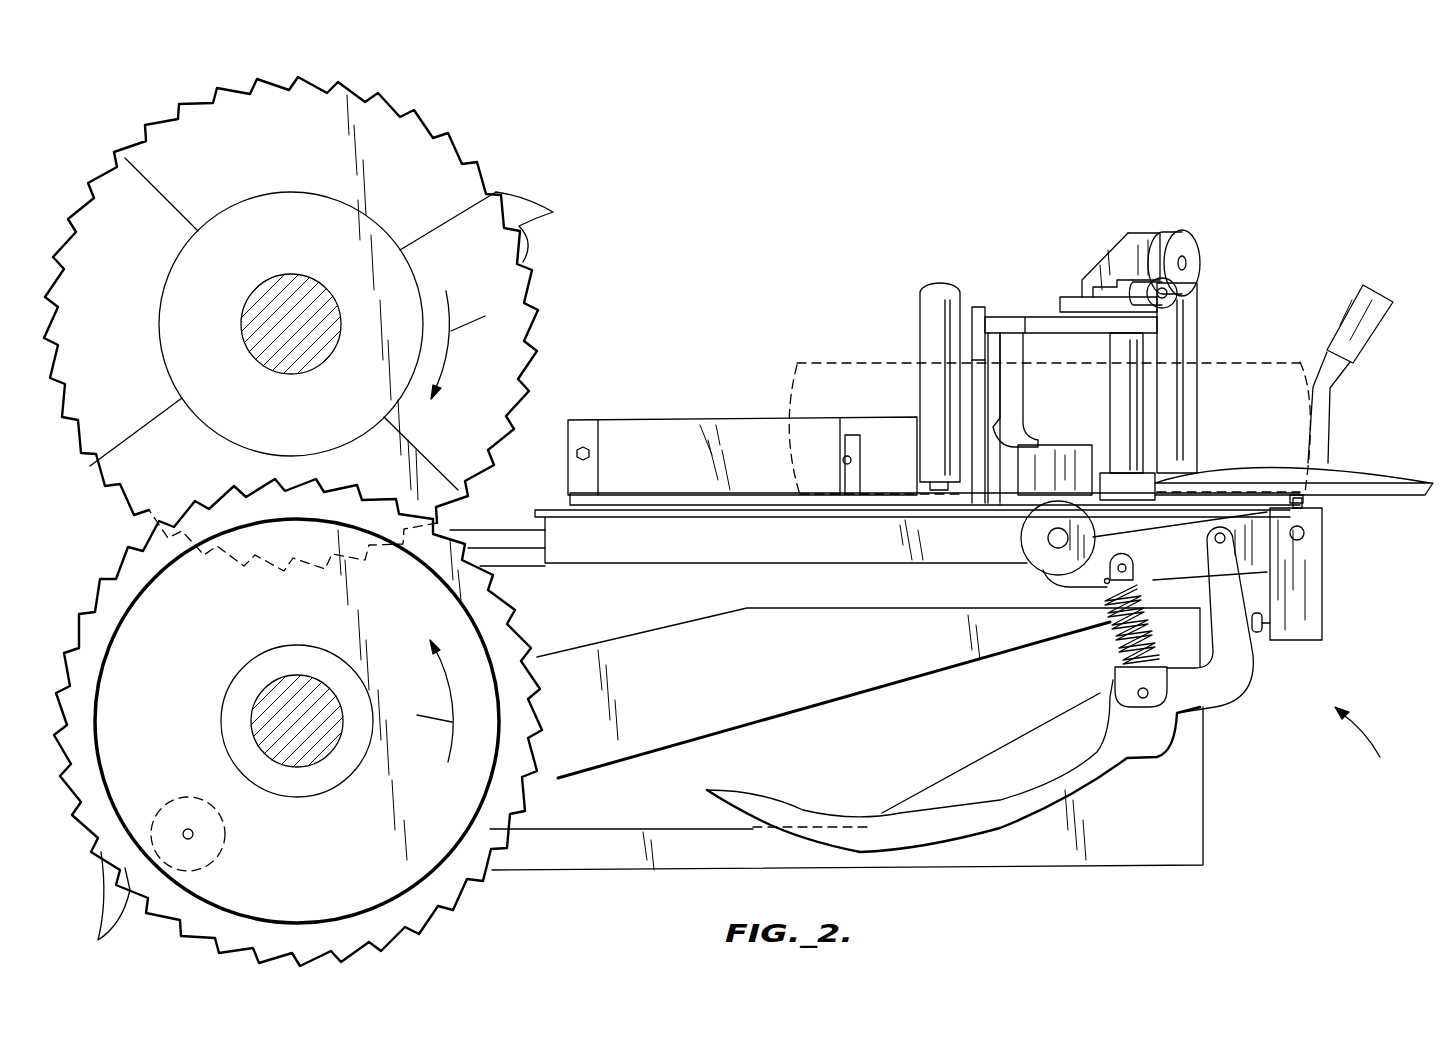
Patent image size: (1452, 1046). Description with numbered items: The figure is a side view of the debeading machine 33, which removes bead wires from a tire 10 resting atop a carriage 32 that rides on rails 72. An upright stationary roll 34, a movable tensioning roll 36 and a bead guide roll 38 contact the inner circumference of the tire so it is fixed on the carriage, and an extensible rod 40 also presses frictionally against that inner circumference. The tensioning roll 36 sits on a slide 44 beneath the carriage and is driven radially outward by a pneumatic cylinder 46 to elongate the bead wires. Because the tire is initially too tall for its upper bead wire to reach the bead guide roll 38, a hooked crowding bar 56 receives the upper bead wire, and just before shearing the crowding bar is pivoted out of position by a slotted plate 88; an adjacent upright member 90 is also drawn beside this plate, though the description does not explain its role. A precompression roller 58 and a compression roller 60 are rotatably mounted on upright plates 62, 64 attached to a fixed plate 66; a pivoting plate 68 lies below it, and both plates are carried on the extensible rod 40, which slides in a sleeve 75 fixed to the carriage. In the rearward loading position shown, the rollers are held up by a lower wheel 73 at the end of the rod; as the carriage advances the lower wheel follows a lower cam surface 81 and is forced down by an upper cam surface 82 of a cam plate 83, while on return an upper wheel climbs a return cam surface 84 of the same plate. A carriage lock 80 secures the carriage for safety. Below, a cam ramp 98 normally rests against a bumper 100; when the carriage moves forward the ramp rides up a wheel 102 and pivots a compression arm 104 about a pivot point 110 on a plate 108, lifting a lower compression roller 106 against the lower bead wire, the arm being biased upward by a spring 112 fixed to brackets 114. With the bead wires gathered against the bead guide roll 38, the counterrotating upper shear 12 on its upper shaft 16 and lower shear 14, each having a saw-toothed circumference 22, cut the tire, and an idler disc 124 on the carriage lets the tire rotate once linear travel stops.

The tire 10 is at (828, 362).
The upper shear 12 is at (455, 149).
The lower shear 14 is at (432, 886).
The upper shaft 16 is at (257, 740).
The saw-toothed circumference 22 is at (324, 573).
The carriage 32 is at (728, 560).
The debeading machine 33 is at (1373, 732).
The stationary roll 34 is at (1173, 340).
The tensioning roll 36 is at (930, 326).
The bead guide roll 38 is at (1035, 497).
The extensible rod 40 is at (1137, 418).
The slide 44 is at (836, 508).
The pneumatic cylinder 46 is at (692, 428).
The hooked crowding bar 56 is at (1013, 413).
The precompression roller 58 is at (1195, 243).
The compression roller 60 is at (1180, 290).
The upright plate 62 is at (1137, 237).
The upright plate 64 is at (1110, 287).
The fixed plate 66 is at (1070, 298).
The pivoting plate 68 is at (1038, 322).
The rails 72 is at (510, 537).
The lower wheel 73 is at (1110, 653).
The sleeve 75 is at (1137, 487).
The carriage lock 80 is at (1366, 335).
The lower cam surface 81 is at (1000, 743).
The upper cam surface 82 is at (792, 707).
The cam plate 83 is at (681, 710).
The return cam surface 84 is at (702, 622).
The slotted plate 88 is at (980, 397).
The post 90 is at (967, 310).
The cam ramp 98 is at (1107, 763).
The bumper 100 is at (1260, 635).
The wheel 102 is at (222, 838).
The compression arm 104 is at (1260, 550).
The lower compression roller 106 is at (1040, 558).
The plate 108 is at (1308, 617).
The pivot point 110 is at (1305, 533).
The spring 112 is at (1147, 578).
The brackets 114 is at (1160, 685).
The idler disc 124 is at (1353, 472).